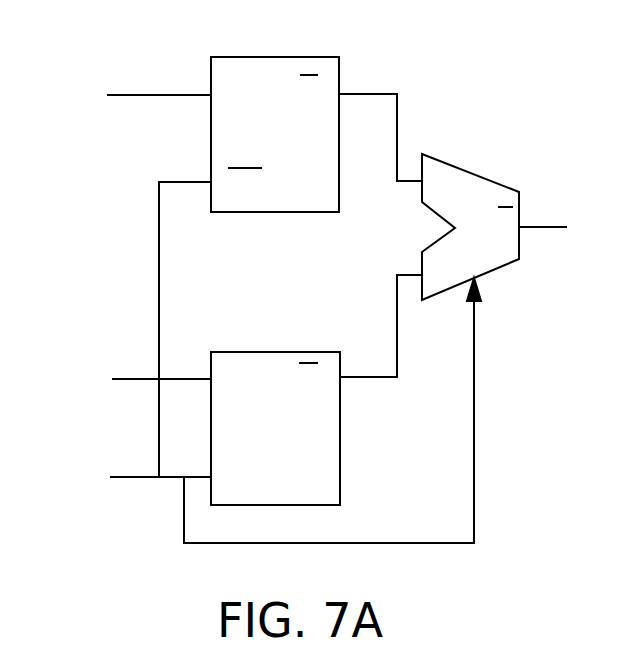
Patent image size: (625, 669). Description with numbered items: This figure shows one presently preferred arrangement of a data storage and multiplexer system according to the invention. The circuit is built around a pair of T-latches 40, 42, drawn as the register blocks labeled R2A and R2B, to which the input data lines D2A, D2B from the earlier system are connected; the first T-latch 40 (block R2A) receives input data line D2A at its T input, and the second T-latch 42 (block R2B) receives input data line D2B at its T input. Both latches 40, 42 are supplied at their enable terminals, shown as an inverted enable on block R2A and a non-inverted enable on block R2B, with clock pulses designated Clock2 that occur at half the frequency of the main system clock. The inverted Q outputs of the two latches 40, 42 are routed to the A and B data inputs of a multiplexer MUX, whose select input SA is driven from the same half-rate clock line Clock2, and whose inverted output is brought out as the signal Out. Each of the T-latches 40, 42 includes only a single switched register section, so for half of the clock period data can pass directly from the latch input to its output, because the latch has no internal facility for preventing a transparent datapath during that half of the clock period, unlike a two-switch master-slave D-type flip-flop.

The T-latch 40 is at (292, 147).
The T-latch 42 is at (282, 436).
The first toggle register R2A is at (275, 116).
The second toggle register R2B is at (275, 408).
The multiplexer MUX is at (472, 211).
The select input of multiplexer SA is at (336, 395).
The input data line D2A is at (149, 80).
The input data line D2B is at (150, 364).
The Clock/2 Clock2 is at (125, 329).
The multiplexer output Out is at (551, 211).